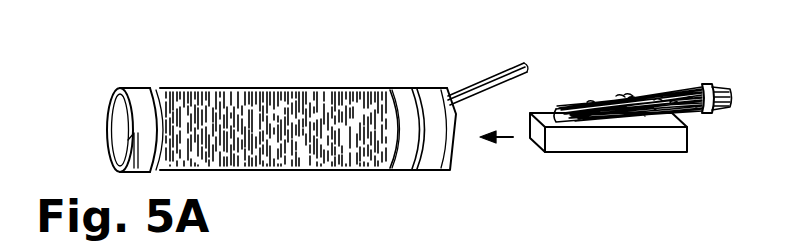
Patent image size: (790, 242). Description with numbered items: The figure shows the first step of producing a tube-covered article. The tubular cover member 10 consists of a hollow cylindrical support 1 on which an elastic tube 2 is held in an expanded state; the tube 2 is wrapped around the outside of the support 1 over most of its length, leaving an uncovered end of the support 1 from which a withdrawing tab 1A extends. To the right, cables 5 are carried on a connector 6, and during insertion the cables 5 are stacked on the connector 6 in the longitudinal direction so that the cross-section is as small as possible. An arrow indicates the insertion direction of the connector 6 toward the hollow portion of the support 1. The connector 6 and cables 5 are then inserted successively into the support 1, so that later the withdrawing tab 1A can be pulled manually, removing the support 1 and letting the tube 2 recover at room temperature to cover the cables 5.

The tubular cover member 10 is at (292, 66).
The tube 2 is at (303, 172).
The cylindrical support 1 is at (413, 171).
The withdrawing tab 1A is at (498, 78).
The cables 5 is at (683, 93).
The connector 6 is at (637, 138).